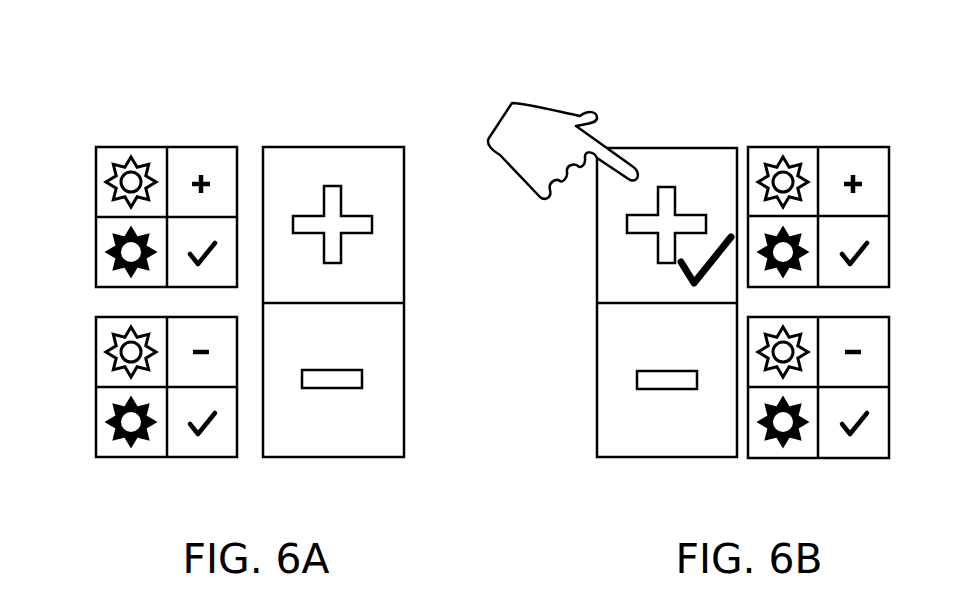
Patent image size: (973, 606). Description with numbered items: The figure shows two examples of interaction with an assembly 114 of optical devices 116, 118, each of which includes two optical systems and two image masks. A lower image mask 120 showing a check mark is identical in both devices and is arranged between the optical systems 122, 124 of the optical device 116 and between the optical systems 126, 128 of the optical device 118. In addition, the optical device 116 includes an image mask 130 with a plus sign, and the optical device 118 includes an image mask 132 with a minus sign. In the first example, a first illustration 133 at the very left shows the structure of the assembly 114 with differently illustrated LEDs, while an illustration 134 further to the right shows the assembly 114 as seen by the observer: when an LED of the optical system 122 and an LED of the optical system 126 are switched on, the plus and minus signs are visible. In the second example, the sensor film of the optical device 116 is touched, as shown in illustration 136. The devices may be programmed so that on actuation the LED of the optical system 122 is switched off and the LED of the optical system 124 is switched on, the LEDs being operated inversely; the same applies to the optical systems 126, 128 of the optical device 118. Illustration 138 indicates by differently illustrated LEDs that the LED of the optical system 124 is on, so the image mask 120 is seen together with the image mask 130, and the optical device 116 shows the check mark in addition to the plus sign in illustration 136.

In FIG. 6A, the assembly 114 is at (345, 84).
In FIG. 6B, the assembly 114 is at (782, 97).
In FIG. 6A, the optical device 116 is at (129, 146).
In FIG. 6B, the optical device 116 is at (894, 131).
In FIG. 6A, the optical device 118 is at (115, 462).
In FIG. 6B, the optical device 118 is at (899, 313).
In FIG. 6A, the lower image mask 120 is at (226, 283).
In FIG. 6B, the lower image mask 120 is at (884, 264).
In FIG. 6A, the optical system 122 is at (95, 193).
In FIG. 6B, the optical system 122 is at (893, 190).
In FIG. 6A, the optical system 124 is at (95, 239).
In FIG. 6B, the optical system 124 is at (893, 236).
In FIG. 6A, the optical system 126 is at (95, 358).
In FIG. 6B, the optical system 126 is at (893, 354).
In FIG. 6A, the optical system 128 is at (95, 416).
In FIG. 6B, the optical system 128 is at (893, 412).
In FIG. 6A, the image mask 130 is at (221, 156).
In FIG. 6B, the image mask 130 is at (839, 154).
In FIG. 6A, the image mask 132 is at (197, 323).
In FIG. 6A, the first illustration 133 is at (167, 473).
In FIG. 6A, the illustration 134 is at (353, 473).
In FIG. 6B, the illustration 136 is at (667, 471).
In FIG. 6B, the illustration 138 is at (823, 473).